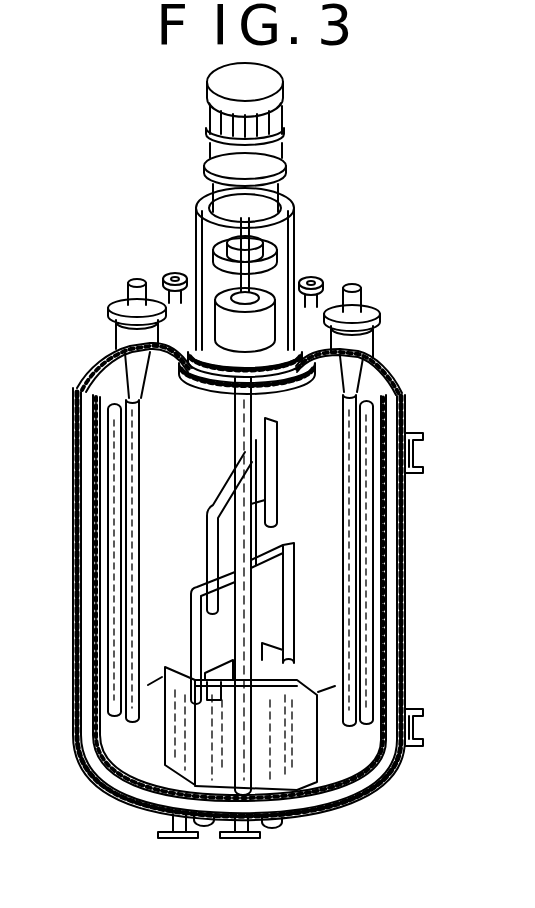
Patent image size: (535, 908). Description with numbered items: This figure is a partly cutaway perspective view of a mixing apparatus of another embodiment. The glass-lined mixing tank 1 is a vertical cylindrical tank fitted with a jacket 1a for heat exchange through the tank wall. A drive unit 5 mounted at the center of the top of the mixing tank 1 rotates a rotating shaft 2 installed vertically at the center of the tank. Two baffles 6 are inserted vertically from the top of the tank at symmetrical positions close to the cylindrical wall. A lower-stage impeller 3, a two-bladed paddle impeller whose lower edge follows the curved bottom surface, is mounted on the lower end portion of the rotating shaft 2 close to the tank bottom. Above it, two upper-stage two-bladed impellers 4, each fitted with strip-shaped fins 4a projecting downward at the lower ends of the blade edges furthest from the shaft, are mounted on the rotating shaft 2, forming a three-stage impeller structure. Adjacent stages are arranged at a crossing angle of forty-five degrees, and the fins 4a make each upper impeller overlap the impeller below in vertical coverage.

The mixing tank 1 is at (383, 360).
The jacket 1a is at (407, 494).
The rotating shaft 2 is at (233, 400).
The lower-stage impeller 3 is at (282, 775).
The upper-stage two-bladed impeller 4 is at (194, 592).
The strip-shaped fins 4a is at (187, 700).
The drive unit 5 is at (282, 132).
The baffles 6 is at (363, 671).